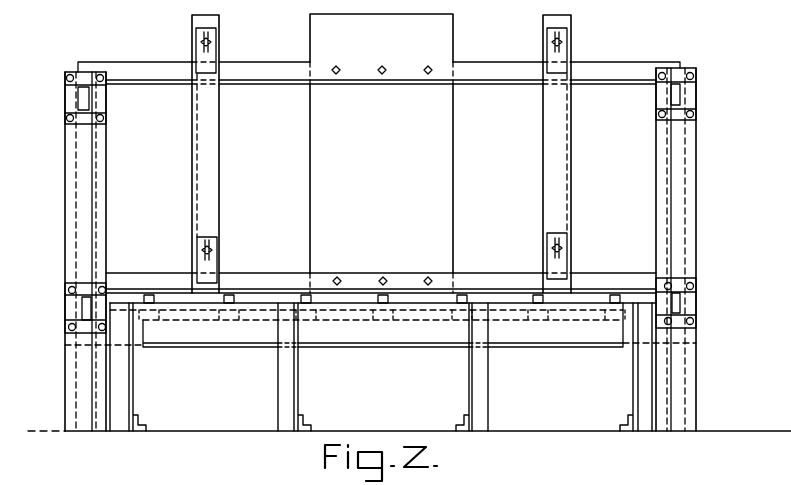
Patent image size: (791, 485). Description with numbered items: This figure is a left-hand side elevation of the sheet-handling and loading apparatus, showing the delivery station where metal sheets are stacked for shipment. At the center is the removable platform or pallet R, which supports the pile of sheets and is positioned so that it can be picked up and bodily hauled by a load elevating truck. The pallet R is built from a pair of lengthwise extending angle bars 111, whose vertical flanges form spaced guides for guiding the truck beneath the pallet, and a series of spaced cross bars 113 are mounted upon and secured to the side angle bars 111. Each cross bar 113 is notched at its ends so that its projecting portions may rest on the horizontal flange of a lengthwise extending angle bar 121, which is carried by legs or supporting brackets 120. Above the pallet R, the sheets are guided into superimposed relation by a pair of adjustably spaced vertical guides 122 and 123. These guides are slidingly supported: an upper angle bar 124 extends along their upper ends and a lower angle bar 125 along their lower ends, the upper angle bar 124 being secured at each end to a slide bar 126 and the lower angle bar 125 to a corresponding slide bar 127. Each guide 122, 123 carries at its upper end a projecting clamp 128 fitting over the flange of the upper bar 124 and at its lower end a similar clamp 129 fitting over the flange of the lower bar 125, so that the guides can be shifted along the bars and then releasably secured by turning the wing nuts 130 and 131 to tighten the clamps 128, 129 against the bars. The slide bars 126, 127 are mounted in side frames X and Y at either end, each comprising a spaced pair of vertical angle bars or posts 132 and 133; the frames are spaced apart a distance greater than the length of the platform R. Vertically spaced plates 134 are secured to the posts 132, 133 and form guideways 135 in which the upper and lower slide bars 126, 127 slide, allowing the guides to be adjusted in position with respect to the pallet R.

The lengthwise extending angle bars 111 is at (212, 348).
The cross bars 113 is at (149, 295).
The legs or supporting brackets 120 is at (128, 401).
The lengthwise extending angle bar 121 is at (137, 346).
The vertical guide 122 is at (562, 154).
The vertical guide 123 is at (203, 168).
The upper angle bar 124 is at (259, 65).
The lower angle bar 125 is at (270, 281).
The slide bar 126 is at (78, 98).
The slide bar 127 is at (82, 310).
The clamp 128 is at (200, 50).
The clamp 129 is at (210, 263).
The wing nut 130 is at (201, 40).
The wing nut 131 is at (214, 240).
The vertical angle bar 132 is at (94, 222).
The vertical angle bar 133 is at (65, 252).
The plates 134 is at (696, 70).
The guideways 135 is at (681, 93).
The side frame X is at (58, 221).
The side frame Y is at (701, 154).
The removable platform or pallet R is at (386, 294).